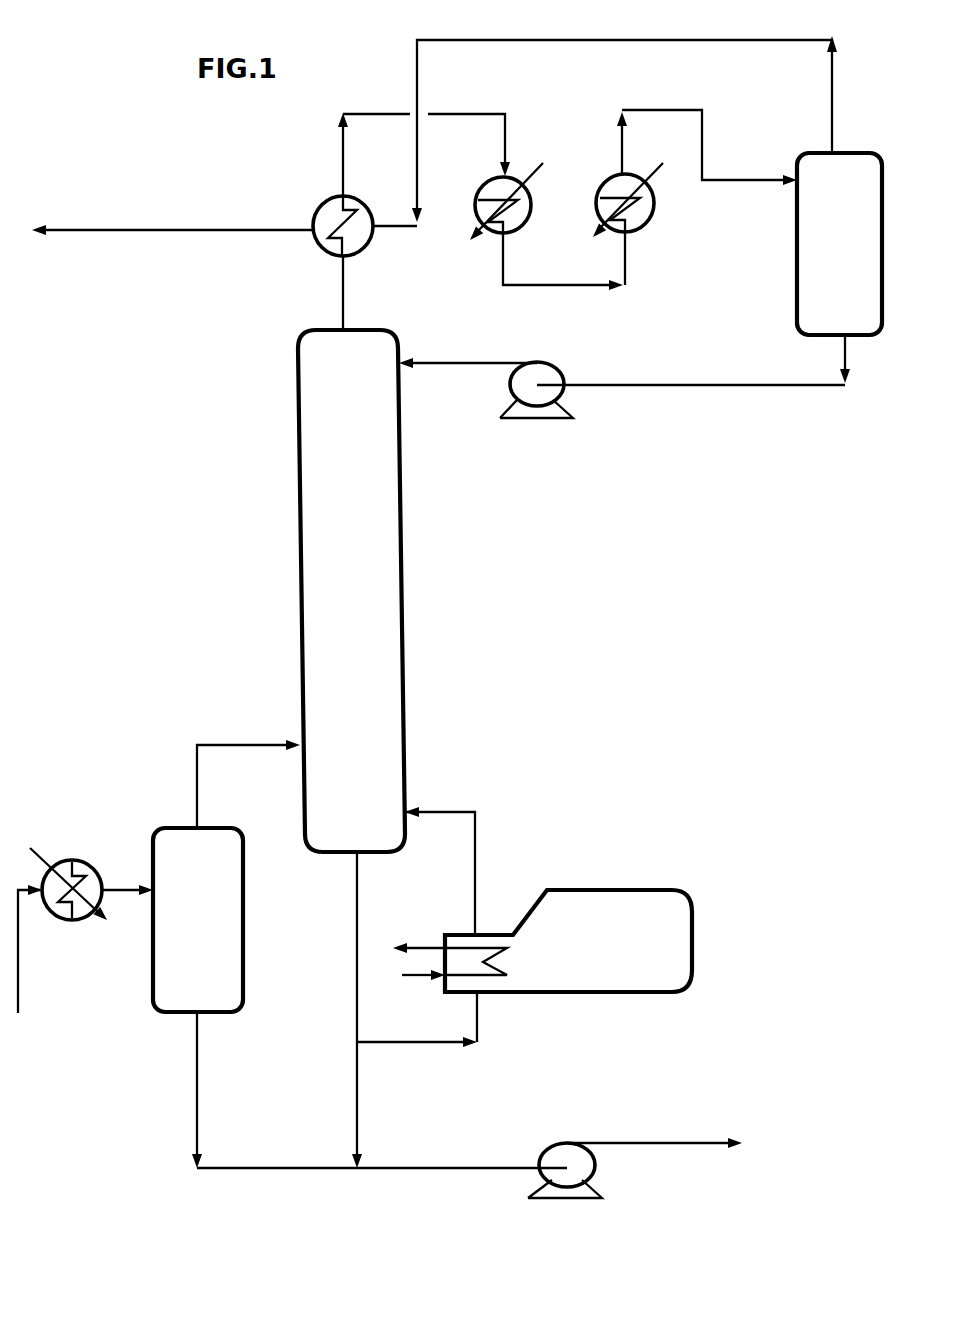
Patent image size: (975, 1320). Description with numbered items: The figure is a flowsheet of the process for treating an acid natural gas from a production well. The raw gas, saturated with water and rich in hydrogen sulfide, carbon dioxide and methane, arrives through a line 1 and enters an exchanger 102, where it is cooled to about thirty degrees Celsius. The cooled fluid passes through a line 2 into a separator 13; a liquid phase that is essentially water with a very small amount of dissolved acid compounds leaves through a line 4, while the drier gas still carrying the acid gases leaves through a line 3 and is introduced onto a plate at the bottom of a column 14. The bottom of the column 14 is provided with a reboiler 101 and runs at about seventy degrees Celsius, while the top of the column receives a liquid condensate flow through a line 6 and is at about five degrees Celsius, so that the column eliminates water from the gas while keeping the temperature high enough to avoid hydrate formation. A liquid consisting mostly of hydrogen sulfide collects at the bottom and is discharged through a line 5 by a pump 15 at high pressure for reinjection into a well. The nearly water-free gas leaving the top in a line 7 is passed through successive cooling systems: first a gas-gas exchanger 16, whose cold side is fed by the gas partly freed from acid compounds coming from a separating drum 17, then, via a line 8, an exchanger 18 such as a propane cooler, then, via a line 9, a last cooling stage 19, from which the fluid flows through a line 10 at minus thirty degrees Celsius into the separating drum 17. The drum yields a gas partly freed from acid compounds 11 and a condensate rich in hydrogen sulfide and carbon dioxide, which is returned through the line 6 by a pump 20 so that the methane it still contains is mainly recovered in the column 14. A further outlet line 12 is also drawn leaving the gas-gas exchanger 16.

The line 1 is at (19, 963).
The line 2 is at (113, 889).
The line 3 is at (198, 762).
The line 4 is at (200, 1030).
The line 5 is at (480, 1167).
The line 6 is at (783, 387).
The line 7 is at (346, 290).
The line 8 is at (343, 147).
The line 9 is at (627, 255).
The line 10 is at (718, 180).
The gas partly freed from acid compounds 11 is at (832, 105).
The overhead product line 12 is at (180, 230).
The separator 13 is at (201, 926).
The column 14 is at (361, 607).
The pump 15 is at (558, 1155).
The gas-gas exchanger 16 is at (316, 245).
The separating drum 17 is at (846, 256).
The exchanger 18 is at (538, 195).
The last cooling stage 19 is at (603, 228).
The pump 20 is at (560, 403).
The reboiler 101 is at (614, 950).
The exchanger 102 is at (70, 920).